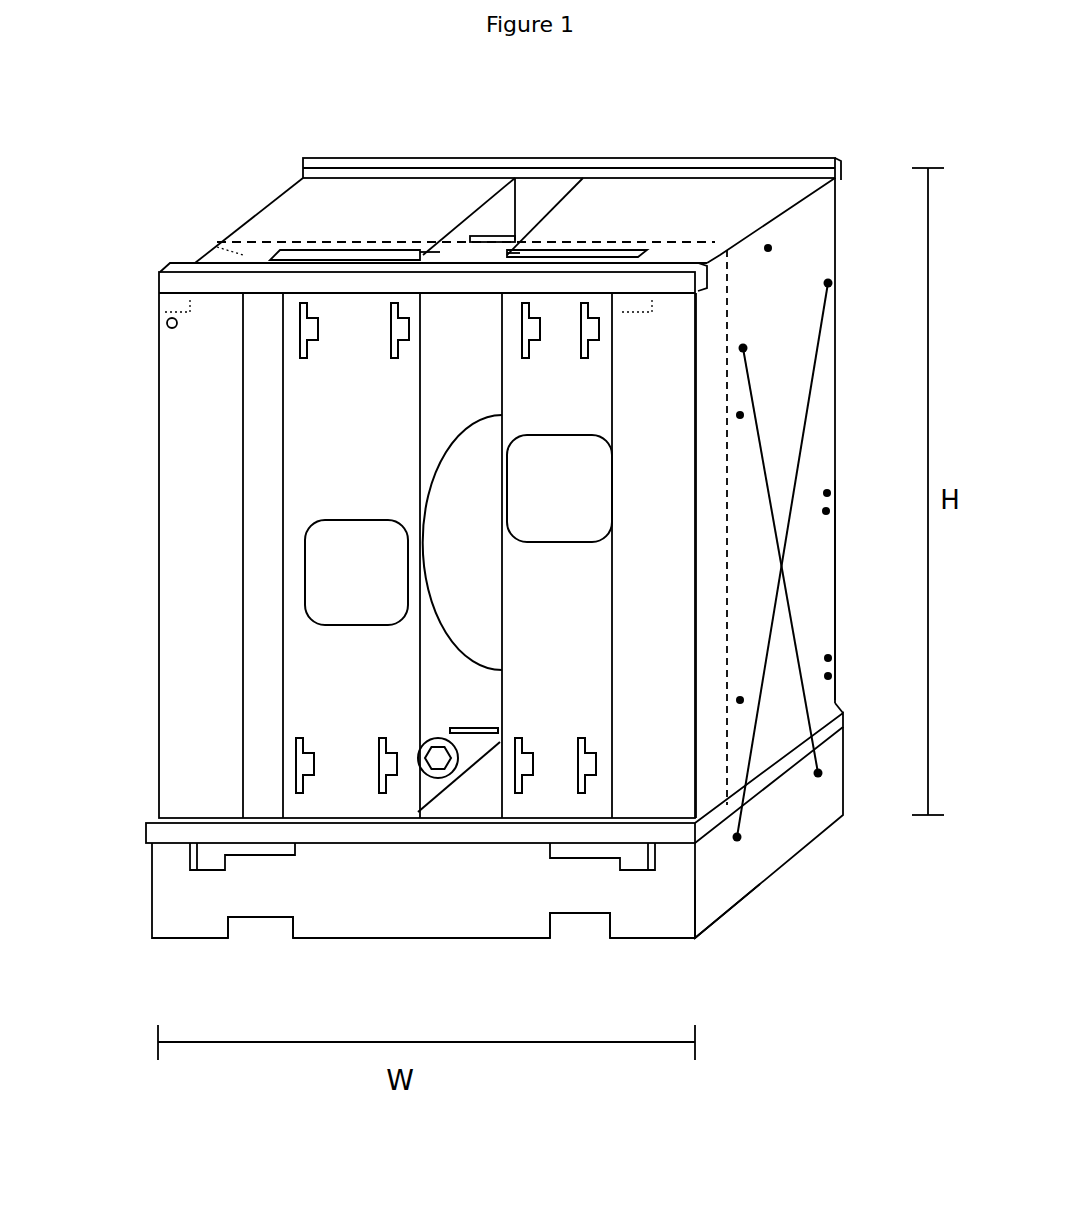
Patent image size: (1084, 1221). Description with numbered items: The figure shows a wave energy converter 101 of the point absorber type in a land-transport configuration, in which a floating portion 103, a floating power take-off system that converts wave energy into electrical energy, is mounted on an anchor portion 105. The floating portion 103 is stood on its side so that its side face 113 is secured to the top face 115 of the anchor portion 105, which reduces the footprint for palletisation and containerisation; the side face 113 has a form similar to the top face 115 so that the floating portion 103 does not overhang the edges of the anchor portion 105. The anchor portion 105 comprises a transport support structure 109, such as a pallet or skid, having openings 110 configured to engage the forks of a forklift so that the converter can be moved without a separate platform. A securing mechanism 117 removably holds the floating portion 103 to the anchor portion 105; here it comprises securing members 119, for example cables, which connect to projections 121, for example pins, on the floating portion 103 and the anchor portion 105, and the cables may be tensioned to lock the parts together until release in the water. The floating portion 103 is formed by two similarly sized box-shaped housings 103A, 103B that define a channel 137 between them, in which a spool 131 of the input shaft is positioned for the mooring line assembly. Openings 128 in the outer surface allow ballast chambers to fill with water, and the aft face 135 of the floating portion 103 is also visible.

The wave energy converter 101 is at (216, 182).
The floating portion 103 is at (124, 819).
The box-shaped housing 103A is at (368, 195).
The box-shaped housing 103B is at (740, 198).
The anchor portion 105 is at (124, 851).
The transport support structure 109 is at (712, 890).
The openings 110 is at (241, 944).
The side face 113 is at (410, 862).
The top face 115 is at (780, 730).
The securing mechanism 117 is at (826, 372).
The securing members 119 is at (800, 438).
The projections 121 is at (826, 284).
The openings 128 is at (830, 492).
The spool 131 is at (475, 470).
The aft face 135 is at (450, 195).
The channel 137 is at (542, 188).